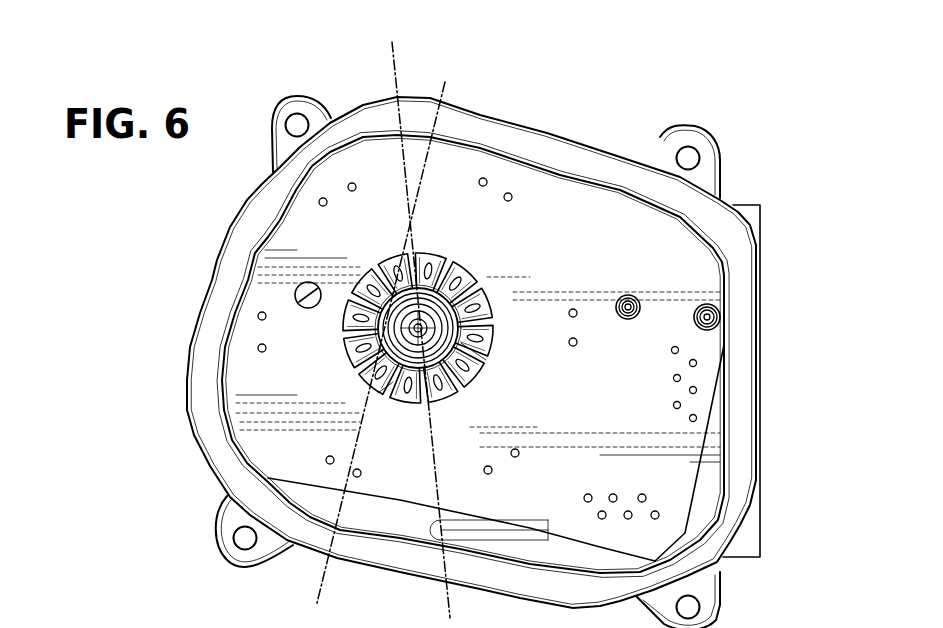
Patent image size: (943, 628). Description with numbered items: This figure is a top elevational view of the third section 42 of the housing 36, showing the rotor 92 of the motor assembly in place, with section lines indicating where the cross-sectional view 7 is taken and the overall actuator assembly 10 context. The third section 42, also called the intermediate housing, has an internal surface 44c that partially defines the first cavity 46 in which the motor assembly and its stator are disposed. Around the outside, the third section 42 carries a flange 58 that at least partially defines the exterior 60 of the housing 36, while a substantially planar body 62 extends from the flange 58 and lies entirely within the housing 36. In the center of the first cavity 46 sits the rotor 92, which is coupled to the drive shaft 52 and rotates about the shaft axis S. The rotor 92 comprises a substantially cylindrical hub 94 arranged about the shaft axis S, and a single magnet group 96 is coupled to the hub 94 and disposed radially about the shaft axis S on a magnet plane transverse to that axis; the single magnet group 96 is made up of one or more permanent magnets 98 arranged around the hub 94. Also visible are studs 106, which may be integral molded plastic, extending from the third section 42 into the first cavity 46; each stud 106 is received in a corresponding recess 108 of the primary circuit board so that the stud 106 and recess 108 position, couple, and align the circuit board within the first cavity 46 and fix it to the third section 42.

The motor assembly 10 is at (294, 603).
The section line 7- 7 is at (492, 618).
The housing 36 is at (596, 160).
The third section 42 is at (713, 212).
The internal surface 44c is at (706, 497).
The first cavity 46 is at (562, 207).
The drive shaft 52 is at (395, 298).
The flange 58 is at (745, 330).
The exterior 60 is at (207, 290).
The body 62 is at (381, 518).
The rotor 92 is at (384, 395).
The hub 94 is at (500, 327).
The single magnet group 96 is at (455, 265).
The permanent magnets 98 is at (471, 363).
The stud 106 is at (700, 302).
The recess 108 is at (700, 328).
The shaft axis S is at (478, 298).